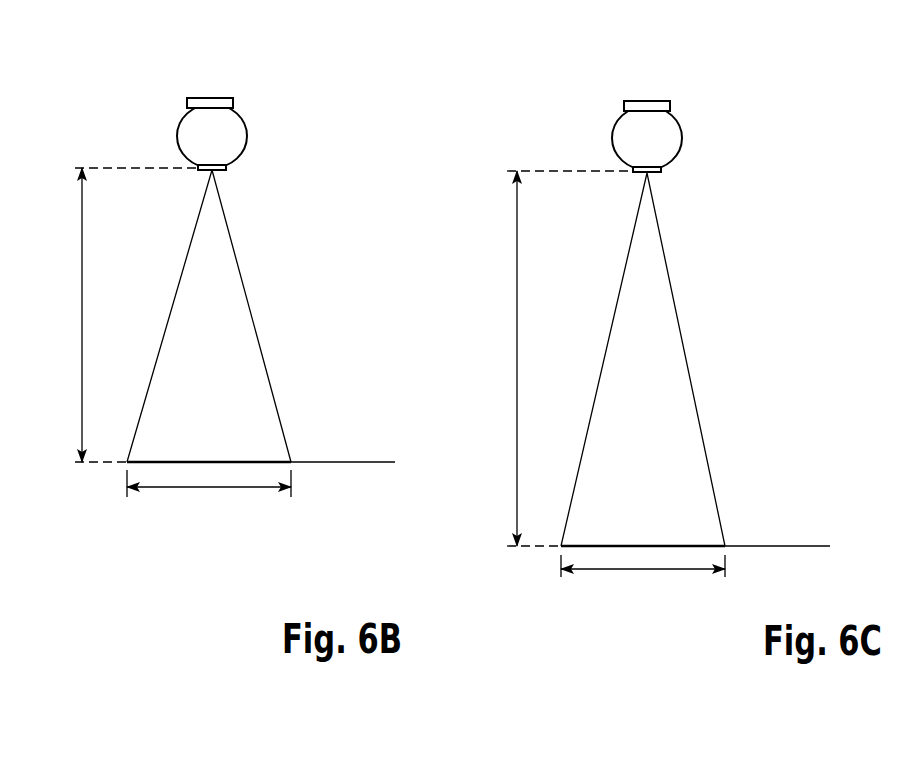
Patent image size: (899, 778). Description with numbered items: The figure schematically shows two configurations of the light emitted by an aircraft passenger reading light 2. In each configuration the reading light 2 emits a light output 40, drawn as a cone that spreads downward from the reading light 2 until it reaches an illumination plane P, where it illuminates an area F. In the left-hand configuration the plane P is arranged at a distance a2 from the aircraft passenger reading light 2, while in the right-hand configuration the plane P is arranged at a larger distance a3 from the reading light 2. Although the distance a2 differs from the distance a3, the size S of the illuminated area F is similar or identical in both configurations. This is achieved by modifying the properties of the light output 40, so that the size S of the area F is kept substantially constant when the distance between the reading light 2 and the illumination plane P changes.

In FIG. 6B, the aircraft passenger reading light 2 is at (258, 112).
In FIG. 6C, the aircraft passenger reading light 2 is at (691, 121).
In FIG. 6B, the light output 40 is at (267, 295).
In FIG. 6C, the light output 40 is at (700, 350).
In FIG. 6B, the area F is at (254, 444).
In FIG. 6C, the area F is at (690, 529).
In FIG. 6B, the illumination plane p is at (358, 463).
In FIG. 6C, the illumination plane p is at (793, 547).
In FIG. 6B, the size S is at (209, 490).
In FIG. 6C, the size S is at (644, 572).
In FIG. 6B, the distance a2 is at (80, 315).
In FIG. 6C, the distance a3 is at (515, 352).